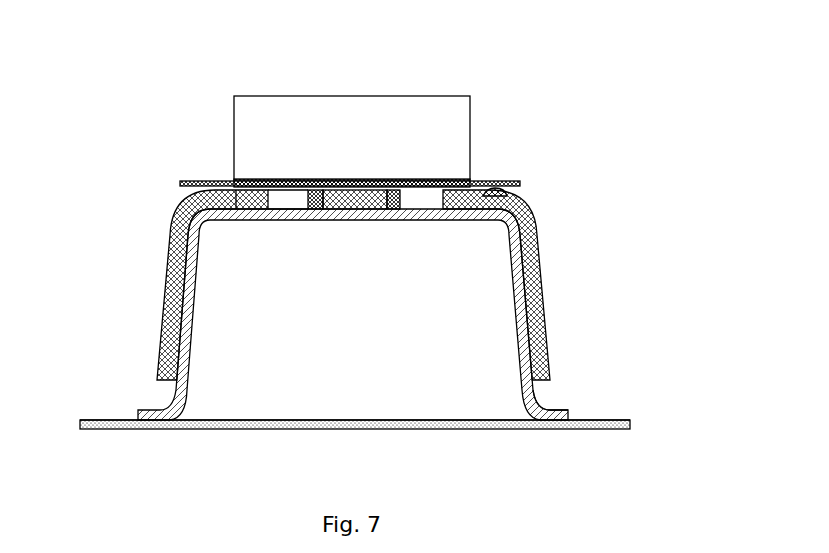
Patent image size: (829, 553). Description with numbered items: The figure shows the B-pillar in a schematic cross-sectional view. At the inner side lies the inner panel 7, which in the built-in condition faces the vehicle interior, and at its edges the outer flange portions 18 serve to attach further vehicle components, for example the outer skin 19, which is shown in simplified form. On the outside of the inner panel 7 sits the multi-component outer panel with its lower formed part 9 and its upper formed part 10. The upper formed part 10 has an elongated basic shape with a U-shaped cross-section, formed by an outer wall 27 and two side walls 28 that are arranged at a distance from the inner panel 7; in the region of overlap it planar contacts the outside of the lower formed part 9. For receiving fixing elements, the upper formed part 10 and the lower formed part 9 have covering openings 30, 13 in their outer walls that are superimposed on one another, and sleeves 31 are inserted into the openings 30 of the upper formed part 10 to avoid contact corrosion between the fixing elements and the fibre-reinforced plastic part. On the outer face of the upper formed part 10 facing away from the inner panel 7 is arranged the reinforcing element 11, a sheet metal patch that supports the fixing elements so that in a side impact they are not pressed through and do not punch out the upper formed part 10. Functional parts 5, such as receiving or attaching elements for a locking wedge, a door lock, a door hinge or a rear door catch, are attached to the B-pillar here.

The functional part 5 is at (454, 122).
The inner panel 7 is at (614, 418).
The lower formed part 9 is at (540, 399).
The upper formed part 10 is at (540, 273).
The reinforcing element 11 is at (496, 196).
The covering opening 13 is at (288, 213).
The outer flange portion 18 is at (108, 418).
The outer skin 19 is at (508, 181).
The outer wall 27 is at (361, 197).
The side wall 28 is at (170, 300).
The covering opening 30 is at (292, 200).
The sleeve 31 is at (256, 199).